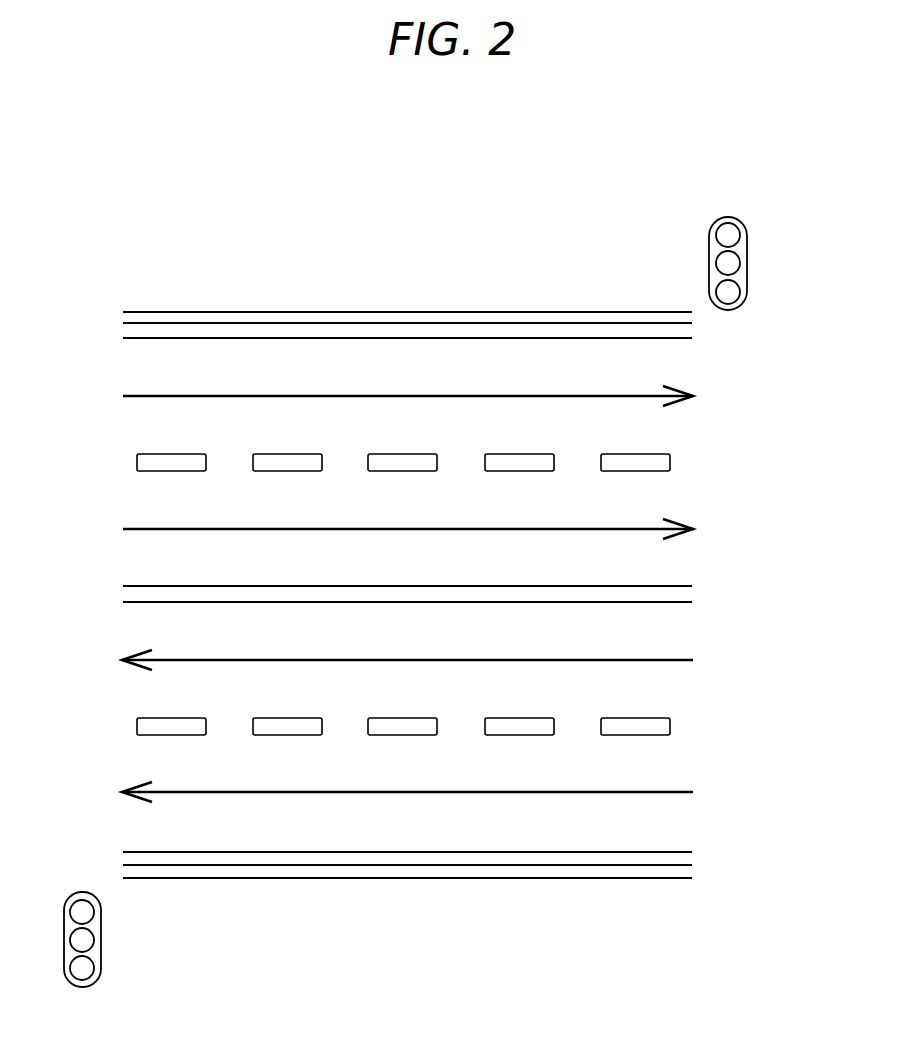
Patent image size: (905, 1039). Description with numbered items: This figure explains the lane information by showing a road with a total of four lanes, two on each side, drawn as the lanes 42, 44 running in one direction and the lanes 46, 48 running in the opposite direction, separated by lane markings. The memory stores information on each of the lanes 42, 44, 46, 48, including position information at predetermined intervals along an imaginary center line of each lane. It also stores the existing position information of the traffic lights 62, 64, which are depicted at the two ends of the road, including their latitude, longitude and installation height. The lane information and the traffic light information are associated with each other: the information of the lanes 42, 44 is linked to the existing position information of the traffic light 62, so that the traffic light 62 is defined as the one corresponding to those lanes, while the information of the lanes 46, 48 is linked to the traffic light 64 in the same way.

The lane 42 is at (445, 396).
The lane 44 is at (445, 529).
The lane 46 is at (445, 660).
The lane 48 is at (445, 792).
The traffic light 62 is at (747, 262).
The traffic light 64 is at (101, 937).